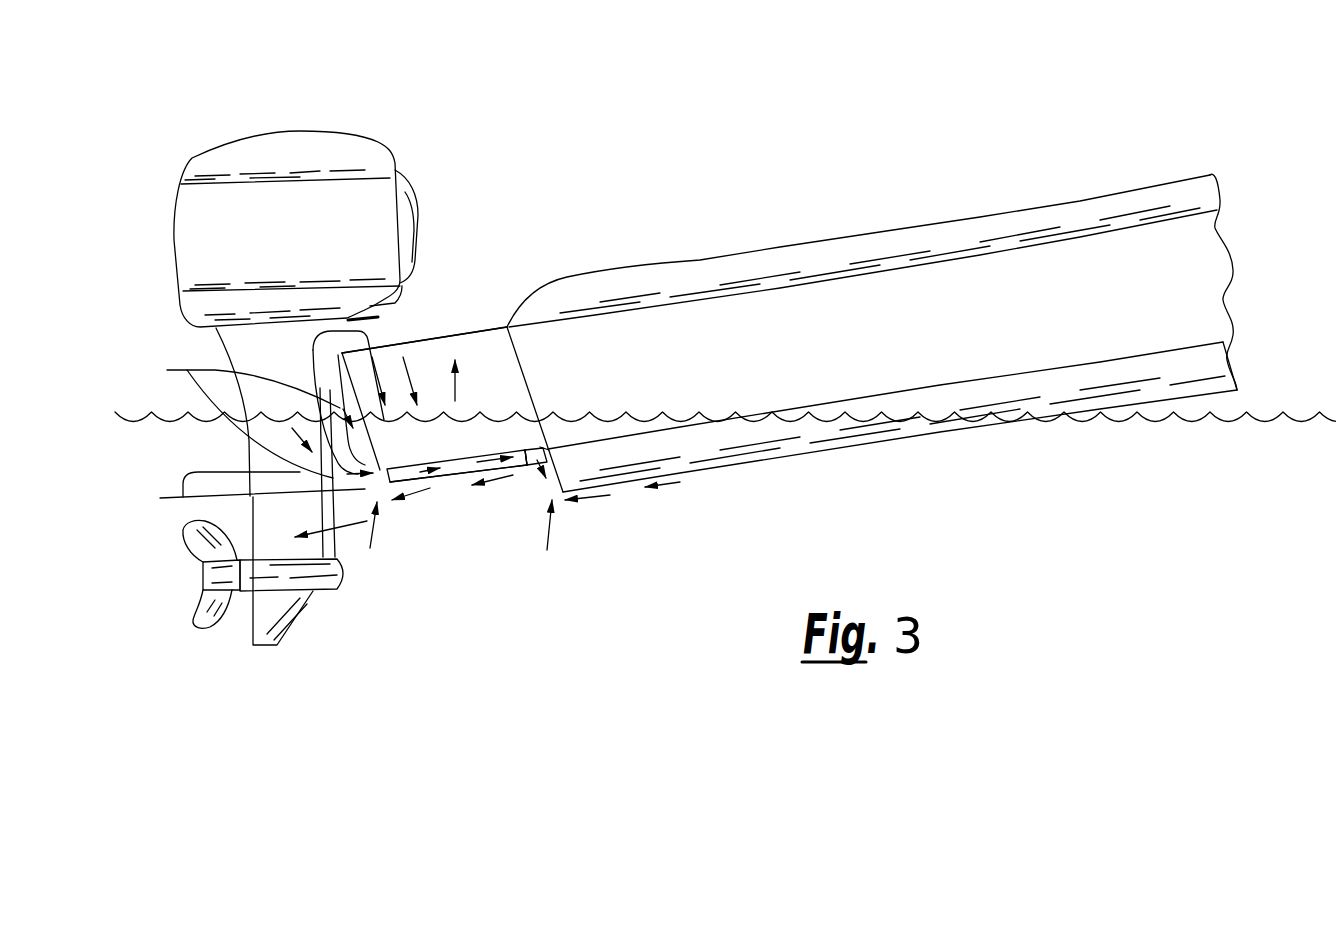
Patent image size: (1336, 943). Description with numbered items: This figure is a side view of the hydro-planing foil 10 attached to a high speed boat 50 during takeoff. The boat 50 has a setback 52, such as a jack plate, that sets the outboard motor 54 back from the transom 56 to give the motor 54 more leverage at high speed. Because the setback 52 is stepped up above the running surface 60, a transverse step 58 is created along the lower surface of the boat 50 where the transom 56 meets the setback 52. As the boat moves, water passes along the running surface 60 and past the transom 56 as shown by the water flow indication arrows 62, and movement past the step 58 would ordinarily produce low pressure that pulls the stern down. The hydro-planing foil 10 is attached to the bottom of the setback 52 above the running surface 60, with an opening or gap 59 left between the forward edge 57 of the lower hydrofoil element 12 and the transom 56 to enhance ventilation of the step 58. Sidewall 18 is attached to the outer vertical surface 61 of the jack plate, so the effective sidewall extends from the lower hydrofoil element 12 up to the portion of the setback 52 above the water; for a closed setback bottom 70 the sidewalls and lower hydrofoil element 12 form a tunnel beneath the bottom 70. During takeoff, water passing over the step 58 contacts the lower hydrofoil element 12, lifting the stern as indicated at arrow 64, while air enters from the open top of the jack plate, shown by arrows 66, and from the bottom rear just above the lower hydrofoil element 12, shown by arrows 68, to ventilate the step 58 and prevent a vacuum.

The hydro-planing foil 10 is at (430, 494).
The lower hydrofoil element 12 is at (456, 478).
The sidewall 18 is at (448, 479).
The high speed boat 50 is at (893, 231).
The setback 52 is at (449, 335).
The outboard motor 54 is at (293, 134).
The transom 56 is at (507, 327).
The forward edge 57 is at (538, 466).
The transverse step 58 is at (549, 438).
The opening or gap 59 is at (545, 547).
The running surface 60 is at (638, 483).
The outer vertical surface 61 is at (369, 546).
The water flow indication arrows 62 is at (482, 345).
The lift arrow 64 is at (458, 389).
The air flow arrows 66 is at (422, 342).
The air flow arrows 68 is at (243, 444).
The setback bottom 70 is at (461, 467).